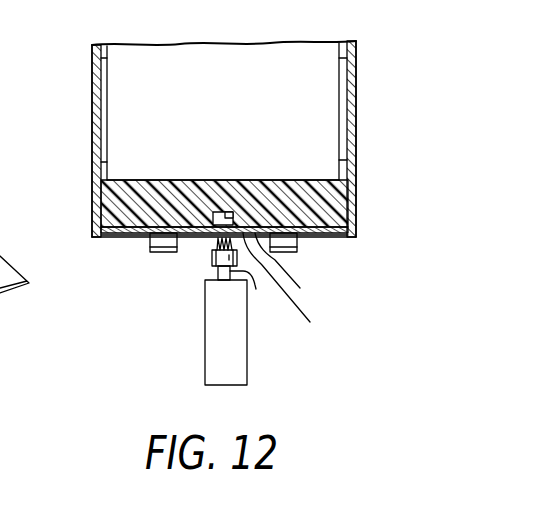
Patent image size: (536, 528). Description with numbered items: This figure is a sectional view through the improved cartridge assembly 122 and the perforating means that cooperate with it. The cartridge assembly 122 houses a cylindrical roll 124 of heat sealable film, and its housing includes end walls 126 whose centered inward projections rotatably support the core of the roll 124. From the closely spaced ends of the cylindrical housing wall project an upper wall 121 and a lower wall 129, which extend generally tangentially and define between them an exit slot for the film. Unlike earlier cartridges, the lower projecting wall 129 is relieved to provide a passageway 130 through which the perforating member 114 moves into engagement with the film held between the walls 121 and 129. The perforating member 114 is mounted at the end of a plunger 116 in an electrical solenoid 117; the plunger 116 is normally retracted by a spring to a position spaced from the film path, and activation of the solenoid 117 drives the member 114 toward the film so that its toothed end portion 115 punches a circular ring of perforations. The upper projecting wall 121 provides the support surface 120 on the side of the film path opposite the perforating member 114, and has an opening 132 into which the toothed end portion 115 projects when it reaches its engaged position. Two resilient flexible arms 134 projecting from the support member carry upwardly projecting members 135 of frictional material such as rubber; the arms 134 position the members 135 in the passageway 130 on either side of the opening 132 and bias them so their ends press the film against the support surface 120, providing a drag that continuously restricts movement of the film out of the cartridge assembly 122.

The cartridge assembly 122 is at (90, 72).
The cylindrical roll 124 is at (288, 55).
The end walls 126 is at (92, 98).
The wall 121 is at (118, 199).
The lower wall 129 is at (121, 240).
The opening 132 is at (227, 212).
The resilient flexible arms 134 is at (163, 253).
The projecting members 135 is at (149, 243).
The end portion 115 is at (213, 246).
The perforating member 114 is at (209, 268).
The plunger 116 is at (263, 290).
The electrical solenoid 117 is at (248, 358).
The support surface 120 is at (298, 270).
The passageway 130 is at (297, 284).